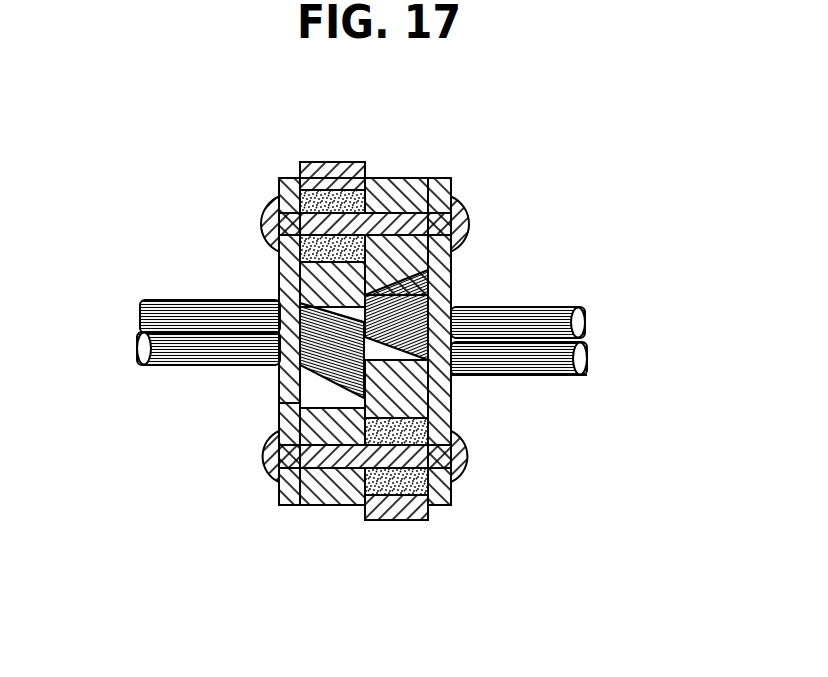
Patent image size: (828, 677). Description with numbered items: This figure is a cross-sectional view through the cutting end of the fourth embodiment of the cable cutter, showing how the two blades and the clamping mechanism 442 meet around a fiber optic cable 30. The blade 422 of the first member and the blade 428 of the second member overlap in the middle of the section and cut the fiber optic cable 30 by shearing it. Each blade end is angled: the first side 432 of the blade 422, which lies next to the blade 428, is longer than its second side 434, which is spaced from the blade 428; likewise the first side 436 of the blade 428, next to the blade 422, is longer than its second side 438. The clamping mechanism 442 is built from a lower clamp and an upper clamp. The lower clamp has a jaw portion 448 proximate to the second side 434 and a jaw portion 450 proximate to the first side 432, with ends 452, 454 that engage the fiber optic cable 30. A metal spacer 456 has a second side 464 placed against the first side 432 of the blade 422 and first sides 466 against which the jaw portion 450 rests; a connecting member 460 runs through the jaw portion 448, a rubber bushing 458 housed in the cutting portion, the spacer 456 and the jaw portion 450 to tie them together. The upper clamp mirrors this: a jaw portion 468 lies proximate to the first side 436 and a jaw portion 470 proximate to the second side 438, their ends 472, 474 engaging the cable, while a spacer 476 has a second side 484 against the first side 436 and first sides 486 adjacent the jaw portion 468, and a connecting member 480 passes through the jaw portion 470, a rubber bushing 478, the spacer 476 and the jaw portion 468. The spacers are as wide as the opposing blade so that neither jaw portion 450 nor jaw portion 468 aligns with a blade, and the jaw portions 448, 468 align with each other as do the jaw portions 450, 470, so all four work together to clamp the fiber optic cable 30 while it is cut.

The fiber optic cable 30 is at (575, 365).
The blade 422 is at (450, 407).
The blade 428 is at (282, 262).
The first side 432 is at (455, 430).
The second side 434 is at (452, 380).
The first side 436 is at (452, 268).
The second side 438 is at (305, 288).
The clamping mechanism 442 is at (468, 156).
The jaw portion 448 is at (450, 418).
The jaw portion 450 is at (277, 403).
The end 452 is at (575, 357).
The end 454 is at (260, 345).
The spacer 456 is at (322, 505).
The rubber bushing 458 is at (398, 500).
The connecting member 460 is at (265, 468).
The second side 464 is at (350, 480).
The first sides 466 is at (305, 505).
The jaw portion 468 is at (452, 182).
The jaw portion 470 is at (283, 186).
The end 472 is at (475, 340).
The end 474 is at (277, 300).
The spacer 476 is at (395, 188).
The rubber bushing 478 is at (329, 176).
The connecting member 480 is at (465, 224).
The second side 484 is at (377, 180).
The first sides 486 is at (430, 180).